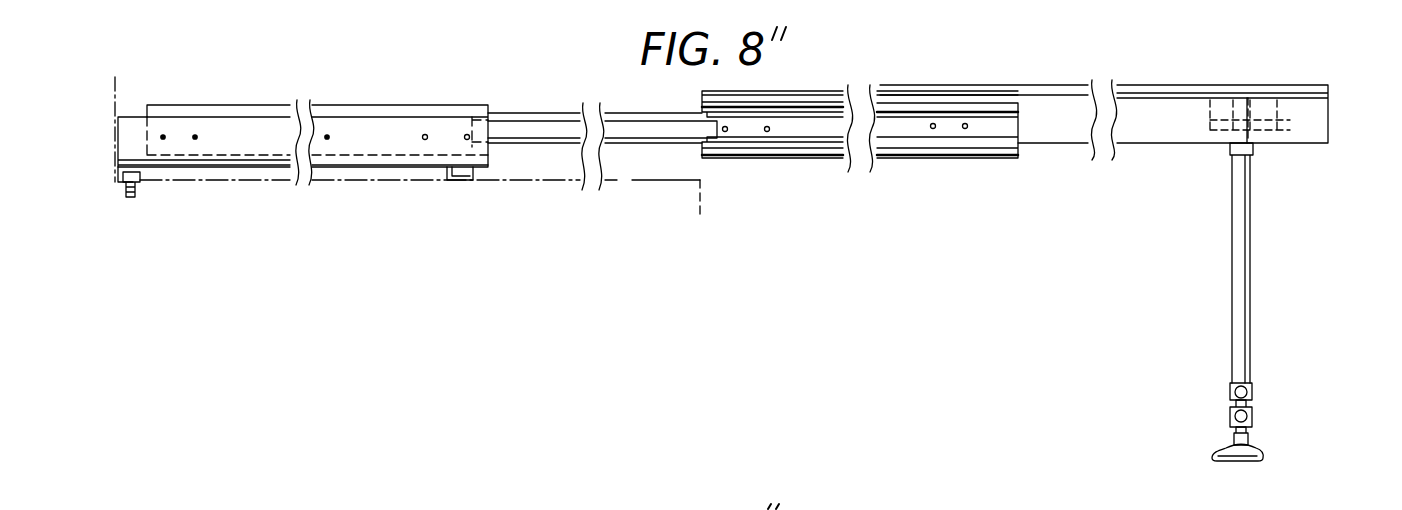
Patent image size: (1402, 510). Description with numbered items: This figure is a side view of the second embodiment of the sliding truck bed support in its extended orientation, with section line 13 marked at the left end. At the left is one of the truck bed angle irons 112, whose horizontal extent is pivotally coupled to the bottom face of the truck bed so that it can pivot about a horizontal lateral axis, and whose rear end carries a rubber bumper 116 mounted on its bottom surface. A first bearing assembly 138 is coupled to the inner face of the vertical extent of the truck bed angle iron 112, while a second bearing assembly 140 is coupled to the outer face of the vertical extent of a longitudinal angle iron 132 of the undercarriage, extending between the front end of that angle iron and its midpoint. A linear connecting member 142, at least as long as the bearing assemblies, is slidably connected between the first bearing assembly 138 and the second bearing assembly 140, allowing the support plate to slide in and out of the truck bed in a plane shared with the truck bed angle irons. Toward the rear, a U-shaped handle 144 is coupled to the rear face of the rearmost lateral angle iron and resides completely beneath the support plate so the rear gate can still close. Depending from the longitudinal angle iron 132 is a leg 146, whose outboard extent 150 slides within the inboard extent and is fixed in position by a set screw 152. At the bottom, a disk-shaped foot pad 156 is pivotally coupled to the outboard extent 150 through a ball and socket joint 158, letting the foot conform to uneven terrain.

The section line 13- 13 is at (85, 67).
The truck bed angle iron 112 is at (130, 132).
The first pair of bearing assemblies 138 is at (395, 105).
The rubber bumper 116 is at (455, 182).
The linear connecting member 142 is at (652, 140).
The second pair of bearing assemblies 140 is at (1017, 158).
The longitudinal angle iron 132 is at (1162, 135).
The U-shaped handle 144 is at (1282, 122).
The leg 146 is at (1248, 293).
The outboard extent 150 is at (1253, 405).
The set screw 152 is at (1223, 420).
The ball and socket joint 158 is at (1248, 443).
The disk-shaped foot pad 156 is at (1245, 461).